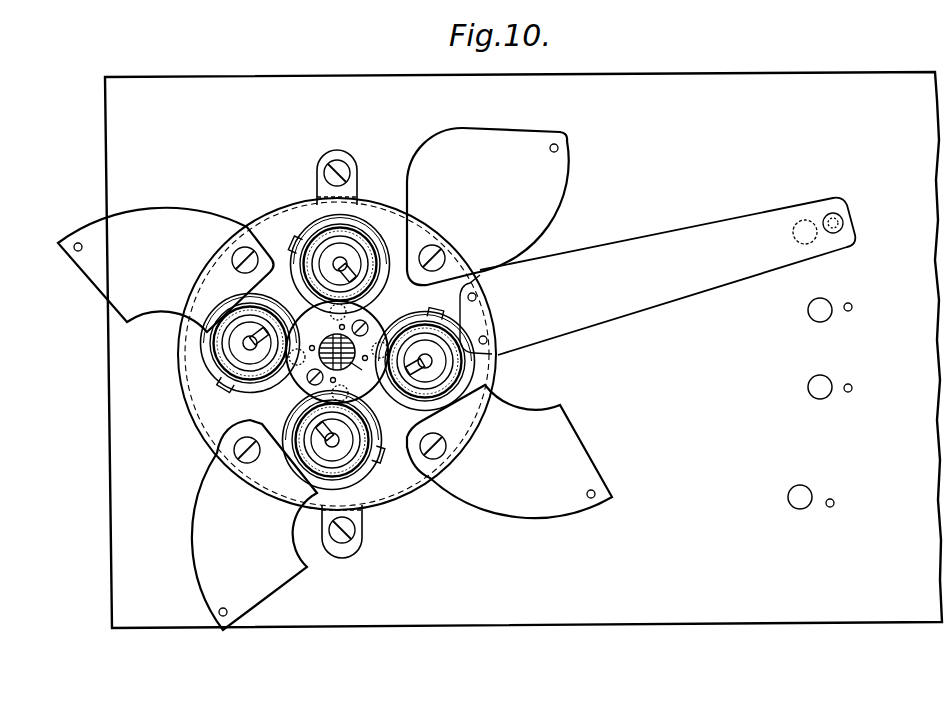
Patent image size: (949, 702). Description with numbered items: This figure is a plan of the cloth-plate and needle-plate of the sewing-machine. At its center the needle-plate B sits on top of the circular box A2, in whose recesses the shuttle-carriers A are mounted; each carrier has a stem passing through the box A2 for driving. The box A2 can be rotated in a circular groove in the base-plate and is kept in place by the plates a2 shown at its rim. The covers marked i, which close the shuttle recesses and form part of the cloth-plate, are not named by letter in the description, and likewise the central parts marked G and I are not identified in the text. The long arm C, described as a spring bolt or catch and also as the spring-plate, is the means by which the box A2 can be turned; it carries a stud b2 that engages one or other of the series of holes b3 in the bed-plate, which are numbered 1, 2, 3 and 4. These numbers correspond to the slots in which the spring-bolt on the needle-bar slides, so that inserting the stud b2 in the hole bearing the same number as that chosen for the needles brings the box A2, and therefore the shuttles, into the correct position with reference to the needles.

The sector-shaped cover plate i is at (335, 379).
The plates a2 is at (352, 186).
The spring bolt or catch C is at (657, 276).
The stud b2 is at (842, 219).
The holes b3 is at (834, 503).
The hole number one 1 is at (800, 497).
The hole number two 2 is at (820, 387).
The hole number three 3 is at (820, 310).
The hole number four 4 is at (805, 232).
The circular box A2 is at (329, 352).
The shuttle-carriers A is at (300, 296).
The needle-plate B is at (337, 352).
The central hub G is at (337, 352).
The pin I is at (359, 373).